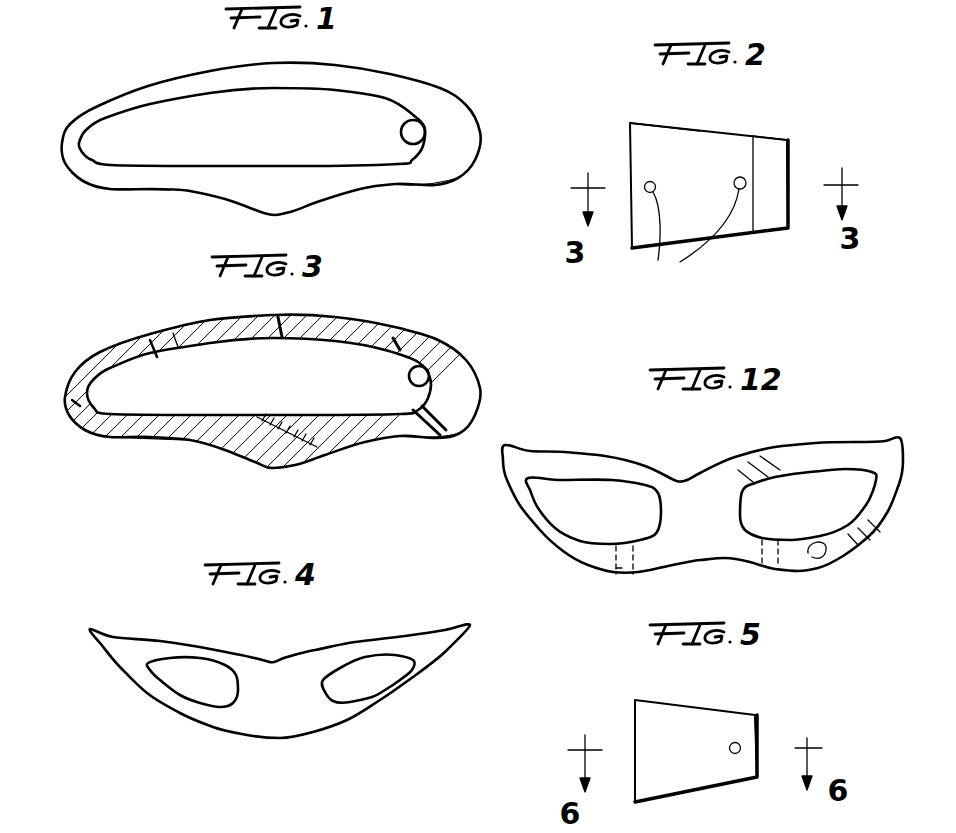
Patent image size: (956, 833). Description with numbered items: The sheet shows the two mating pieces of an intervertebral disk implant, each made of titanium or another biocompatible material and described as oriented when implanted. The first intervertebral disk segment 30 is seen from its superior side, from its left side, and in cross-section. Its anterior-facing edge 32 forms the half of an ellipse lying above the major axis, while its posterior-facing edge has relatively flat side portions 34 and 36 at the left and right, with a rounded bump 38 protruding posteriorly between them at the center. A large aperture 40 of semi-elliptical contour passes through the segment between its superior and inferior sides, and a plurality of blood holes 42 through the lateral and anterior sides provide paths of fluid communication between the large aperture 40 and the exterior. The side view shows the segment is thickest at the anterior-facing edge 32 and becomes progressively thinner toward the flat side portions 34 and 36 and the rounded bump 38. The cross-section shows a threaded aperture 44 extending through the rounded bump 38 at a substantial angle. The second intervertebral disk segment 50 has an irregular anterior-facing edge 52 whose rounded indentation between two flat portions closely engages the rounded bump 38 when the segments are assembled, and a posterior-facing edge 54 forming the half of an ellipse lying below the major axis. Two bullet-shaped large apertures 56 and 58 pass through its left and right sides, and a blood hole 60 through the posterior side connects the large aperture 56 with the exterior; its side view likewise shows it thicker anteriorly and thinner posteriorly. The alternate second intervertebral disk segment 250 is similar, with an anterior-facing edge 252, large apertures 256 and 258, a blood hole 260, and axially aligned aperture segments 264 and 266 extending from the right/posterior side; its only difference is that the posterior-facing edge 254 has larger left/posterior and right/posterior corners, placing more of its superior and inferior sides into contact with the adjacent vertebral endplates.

In FIG. 1, the first intervertebral disk segment 30 is at (452, 106).
In FIG. 2, the first intervertebral disk segment 30 is at (641, 250).
In FIG. 3, the first intervertebral disk segment 30 is at (112, 347).
In FIG. 1, the anterior-facing edge 32 is at (156, 85).
In FIG. 2, the anterior-facing edge 32 is at (628, 137).
In FIG. 3, the anterior-facing edge 32 is at (453, 343).
In FIG. 1, the flat side portion 34 is at (134, 190).
In FIG. 2, the flat side portion 34 is at (757, 217).
In FIG. 3, the flat side portion 34 is at (183, 437).
In FIG. 1, the flat side portion 36 is at (407, 187).
In FIG. 3, the flat side portion 36 is at (388, 437).
In FIG. 1, the rounded bump 38 is at (281, 214).
In FIG. 2, the rounded bump 38 is at (790, 157).
In FIG. 3, the rounded bump 38 is at (270, 467).
In FIG. 1, the large aperture 40 is at (420, 143).
In FIG. 3, the large aperture 40 is at (413, 378).
In FIG. 2, the blood holes 42 is at (696, 236).
In FIG. 3, the blood holes 42 is at (153, 340).
In FIG. 3, the threaded aperture 44 is at (313, 447).
In FIG. 4, the second intervertebral disk segment 50 is at (170, 711).
In FIG. 5, the second intervertebral disk segment 50 is at (650, 705).
In FIG. 4, the anterior-facing edge 52 is at (263, 656).
In FIG. 5, the anterior-facing edge 52 is at (633, 722).
In FIG. 4, the posterior-facing edge 54 is at (280, 739).
In FIG. 5, the posterior-facing edge 54 is at (758, 727).
In FIG. 4, the large aperture 56 is at (213, 698).
In FIG. 4, the large aperture 58 is at (349, 699).
In FIG. 5, the blood hole 60 is at (735, 745).
In FIG. 12, the second intervertebral disk segment 250 is at (528, 546).
In FIG. 12, the anterior-facing edge 252 is at (687, 477).
In FIG. 12, the posterior-facing edge 254 is at (690, 560).
In FIG. 12, the large aperture 256 is at (558, 526).
In FIG. 12, the large aperture 258 is at (825, 553).
In FIG. 12, the blood hole 260 is at (616, 578).
In FIG. 12, the aperture segment 264 is at (882, 540).
In FIG. 12, the aperture segment 266 is at (745, 460).